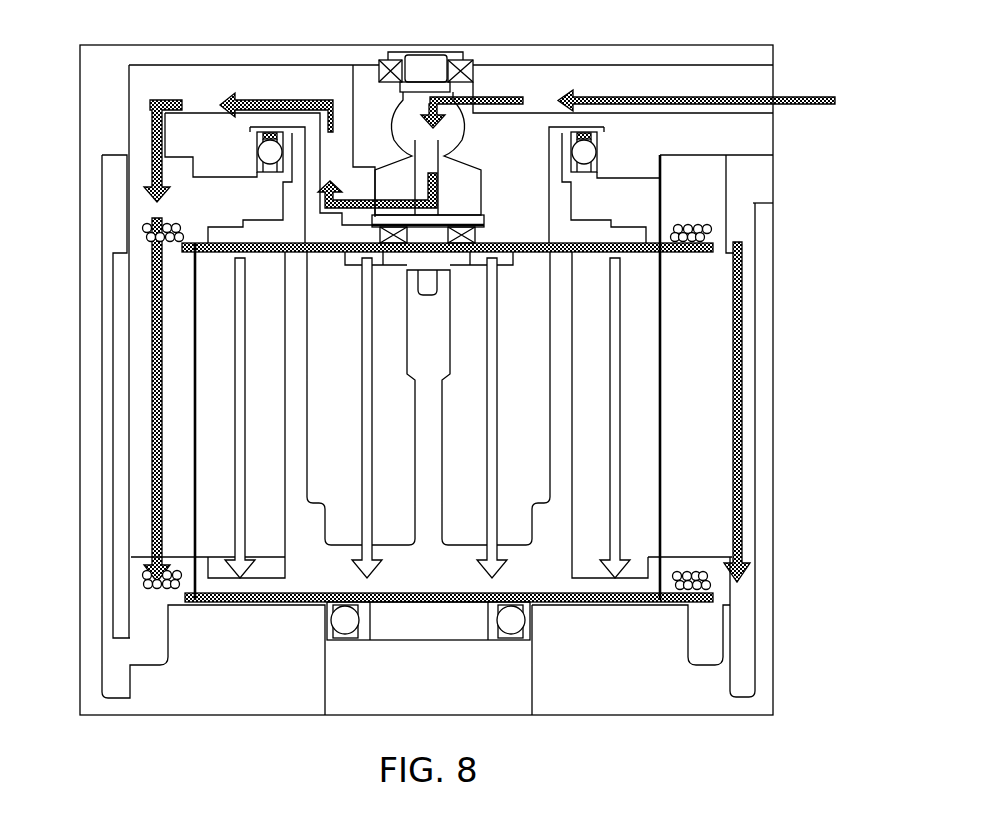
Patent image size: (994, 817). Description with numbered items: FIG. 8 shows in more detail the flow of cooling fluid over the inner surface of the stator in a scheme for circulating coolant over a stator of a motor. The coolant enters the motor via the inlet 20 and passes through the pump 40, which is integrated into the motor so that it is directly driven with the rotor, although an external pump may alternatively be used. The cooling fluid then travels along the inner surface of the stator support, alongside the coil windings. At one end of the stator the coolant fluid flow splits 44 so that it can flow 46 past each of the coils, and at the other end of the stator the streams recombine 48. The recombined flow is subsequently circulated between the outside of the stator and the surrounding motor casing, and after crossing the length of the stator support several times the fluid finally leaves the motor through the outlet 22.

The inlet 20 is at (766, 77).
The outlet 22 is at (766, 185).
The pump 40 is at (380, 104).
The coolant fluid flow split 44 is at (143, 228).
The coolant flow past coils 46 is at (152, 372).
The recombined coolant flow 48 is at (745, 612).